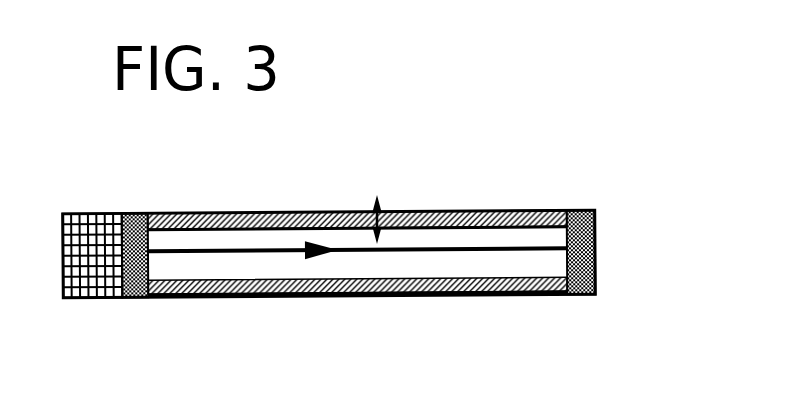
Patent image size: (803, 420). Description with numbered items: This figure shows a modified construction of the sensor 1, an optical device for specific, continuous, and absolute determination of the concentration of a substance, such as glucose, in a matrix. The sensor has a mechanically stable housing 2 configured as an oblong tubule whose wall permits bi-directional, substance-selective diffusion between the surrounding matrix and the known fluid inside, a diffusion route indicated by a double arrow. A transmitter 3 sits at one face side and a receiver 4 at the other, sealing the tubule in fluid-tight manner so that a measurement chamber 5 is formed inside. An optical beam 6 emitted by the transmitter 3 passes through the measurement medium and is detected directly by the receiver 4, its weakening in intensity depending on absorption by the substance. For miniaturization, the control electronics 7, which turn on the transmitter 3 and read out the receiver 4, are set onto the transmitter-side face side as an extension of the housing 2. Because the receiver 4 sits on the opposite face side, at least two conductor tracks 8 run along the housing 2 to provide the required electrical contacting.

The sensor 1 is at (492, 108).
The housing 2 is at (363, 210).
The transmitter 3 is at (135, 297).
The receiver 4 is at (596, 262).
The measurement chamber 5 is at (482, 237).
The optical beam 6 is at (248, 250).
The control electronics 7 is at (91, 213).
The conductor tracks 8 is at (388, 294).